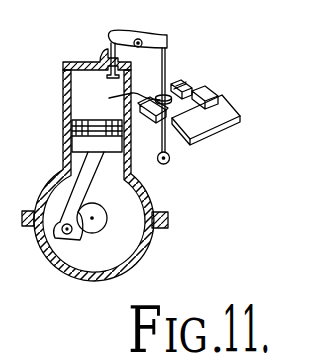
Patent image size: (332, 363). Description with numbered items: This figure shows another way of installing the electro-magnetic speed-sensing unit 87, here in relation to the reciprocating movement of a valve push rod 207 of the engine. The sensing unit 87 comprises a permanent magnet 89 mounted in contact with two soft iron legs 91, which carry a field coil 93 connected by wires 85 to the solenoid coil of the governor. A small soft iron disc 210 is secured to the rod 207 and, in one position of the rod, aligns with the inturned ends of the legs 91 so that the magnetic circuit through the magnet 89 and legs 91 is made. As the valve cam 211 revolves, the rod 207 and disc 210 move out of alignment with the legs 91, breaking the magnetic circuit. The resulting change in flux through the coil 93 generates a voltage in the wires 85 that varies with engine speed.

The valve push rod 207 is at (166, 52).
The soft iron legs 91 is at (176, 80).
The wires 85 is at (196, 80).
The field coil 93 is at (226, 96).
The sensing unit 87 is at (240, 104).
The permanent magnet 89 is at (212, 117).
The soft iron disc 210 is at (122, 100).
The valve cam 211 is at (170, 162).